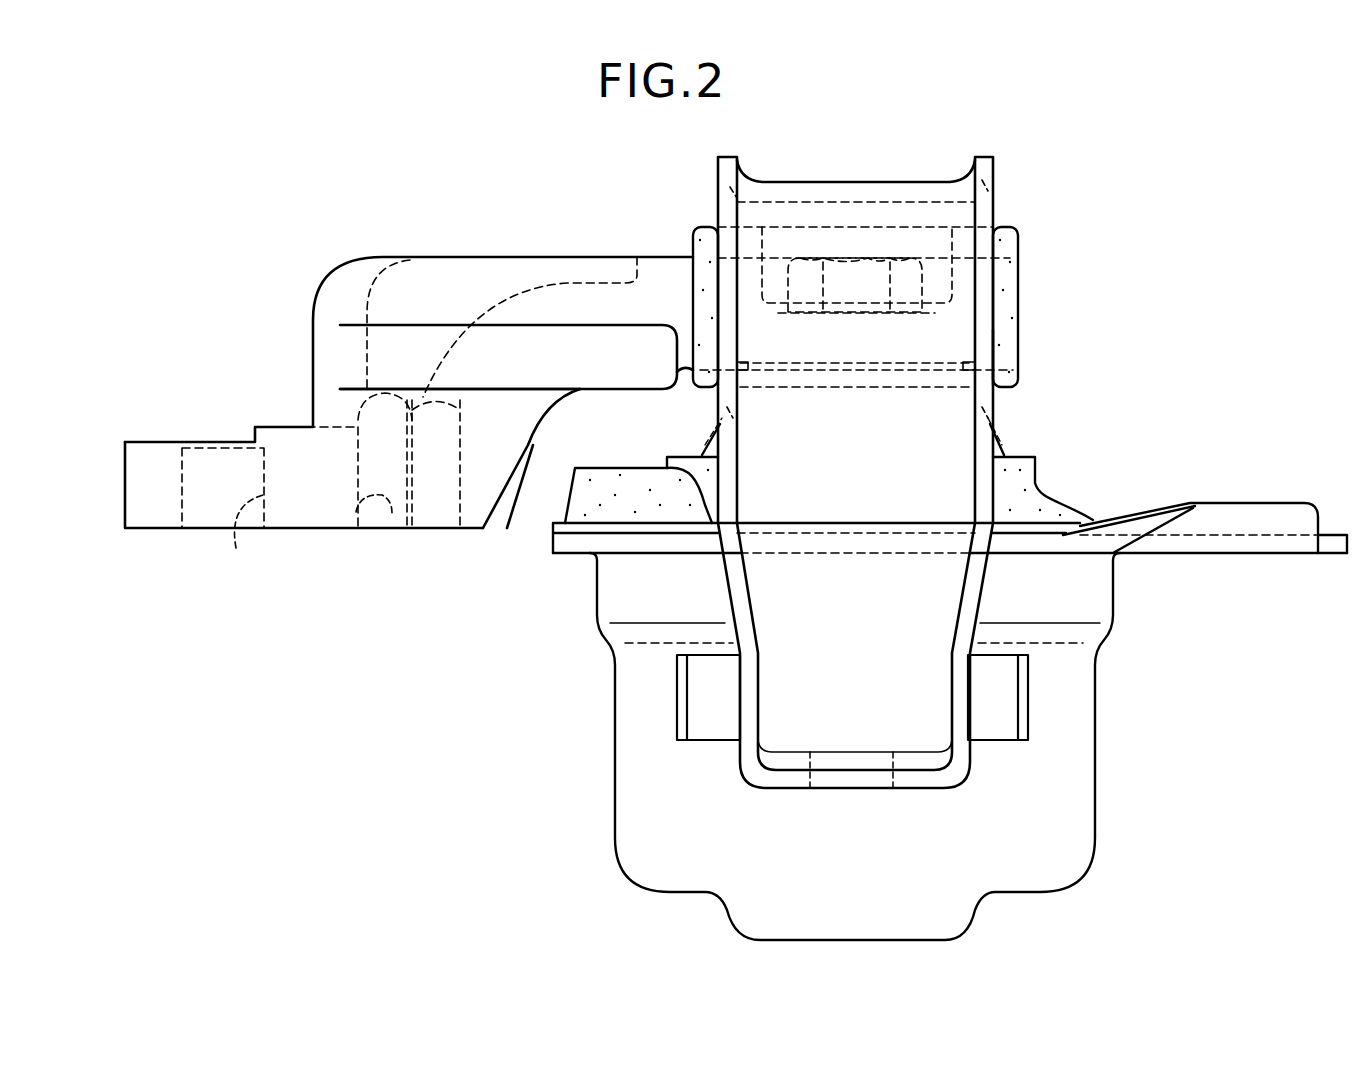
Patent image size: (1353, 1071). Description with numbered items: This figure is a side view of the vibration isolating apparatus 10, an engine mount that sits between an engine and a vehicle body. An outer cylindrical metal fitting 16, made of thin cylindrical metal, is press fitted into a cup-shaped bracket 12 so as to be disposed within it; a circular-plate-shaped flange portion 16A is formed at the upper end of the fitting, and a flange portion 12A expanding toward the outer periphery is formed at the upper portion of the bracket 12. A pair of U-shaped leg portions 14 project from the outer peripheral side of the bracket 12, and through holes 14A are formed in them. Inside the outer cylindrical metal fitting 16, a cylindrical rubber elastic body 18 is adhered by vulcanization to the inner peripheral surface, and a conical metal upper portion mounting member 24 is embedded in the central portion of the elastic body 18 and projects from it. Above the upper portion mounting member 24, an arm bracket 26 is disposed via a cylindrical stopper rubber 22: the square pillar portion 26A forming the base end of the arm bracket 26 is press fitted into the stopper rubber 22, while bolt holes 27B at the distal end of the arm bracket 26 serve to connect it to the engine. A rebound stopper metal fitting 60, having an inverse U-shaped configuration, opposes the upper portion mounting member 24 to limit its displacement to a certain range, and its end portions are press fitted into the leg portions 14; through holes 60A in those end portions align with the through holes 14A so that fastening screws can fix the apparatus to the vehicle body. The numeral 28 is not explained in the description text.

The vibration isolating apparatus 10 is at (1181, 319).
The bracket 12 is at (1097, 767).
The flange portion 12A is at (1037, 553).
The leg portions 14 is at (985, 713).
The through holes 14A is at (870, 785).
The outer cylindrical metal fitting 16 is at (549, 529).
The flange portion 16A is at (1040, 528).
The rubber elastic body 18 is at (1037, 480).
The stopper rubber 22 is at (1018, 240).
The upper portion mounting member 24 is at (968, 378).
The arm bracket 26 is at (527, 257).
The square pillar portion 26A is at (1020, 285).
The bolt holes 27B is at (368, 545).
The nut 28 is at (868, 250).
The rebound stopper metal fitting 60 is at (903, 192).
The through holes 60A is at (812, 765).